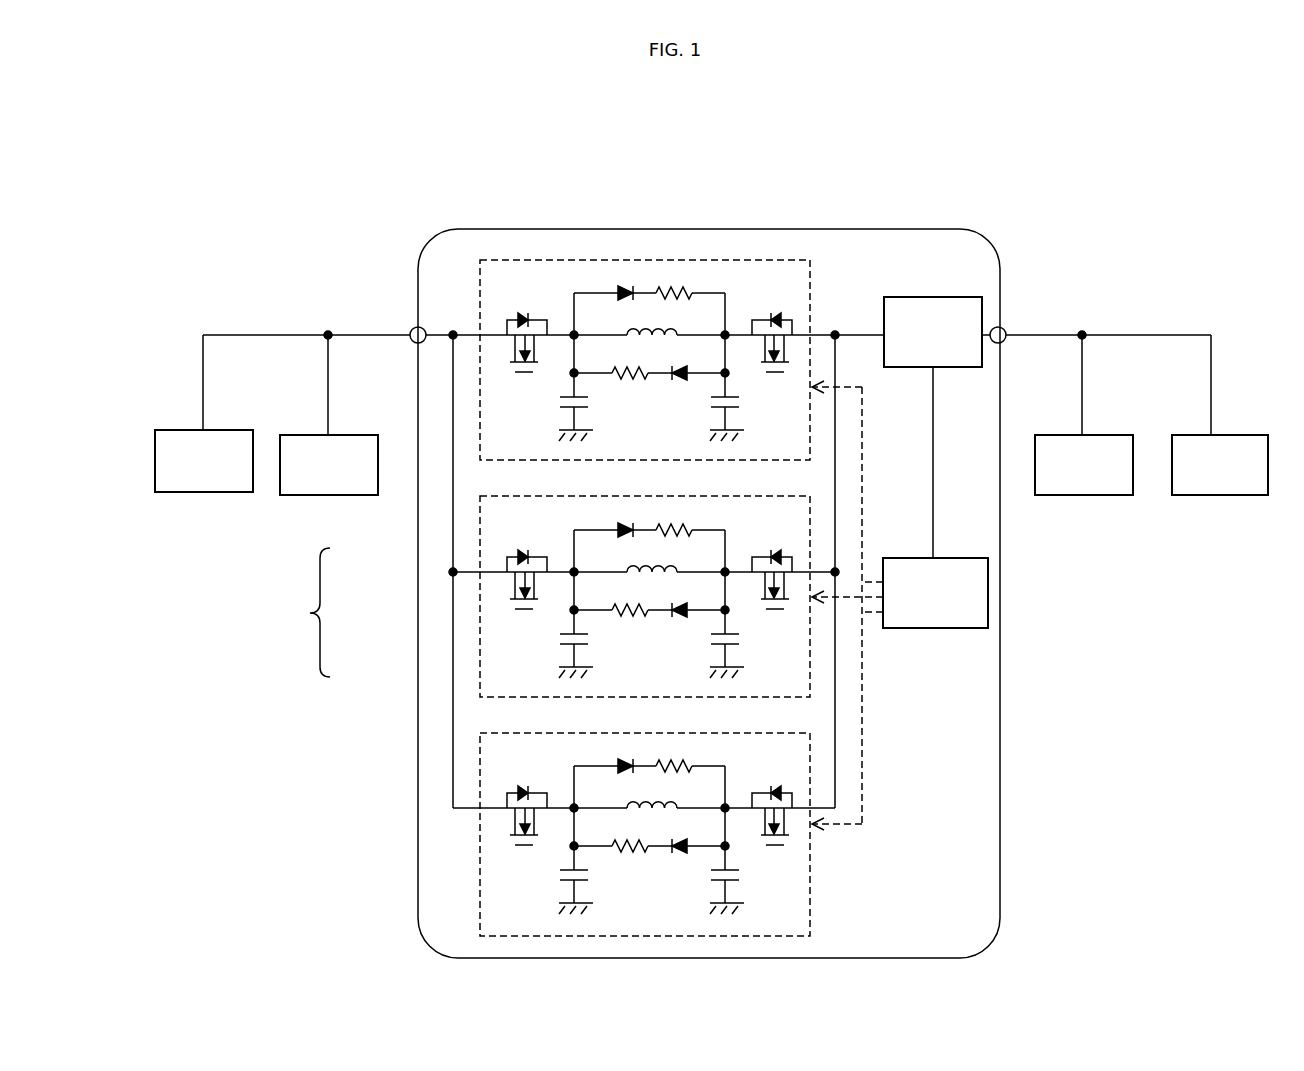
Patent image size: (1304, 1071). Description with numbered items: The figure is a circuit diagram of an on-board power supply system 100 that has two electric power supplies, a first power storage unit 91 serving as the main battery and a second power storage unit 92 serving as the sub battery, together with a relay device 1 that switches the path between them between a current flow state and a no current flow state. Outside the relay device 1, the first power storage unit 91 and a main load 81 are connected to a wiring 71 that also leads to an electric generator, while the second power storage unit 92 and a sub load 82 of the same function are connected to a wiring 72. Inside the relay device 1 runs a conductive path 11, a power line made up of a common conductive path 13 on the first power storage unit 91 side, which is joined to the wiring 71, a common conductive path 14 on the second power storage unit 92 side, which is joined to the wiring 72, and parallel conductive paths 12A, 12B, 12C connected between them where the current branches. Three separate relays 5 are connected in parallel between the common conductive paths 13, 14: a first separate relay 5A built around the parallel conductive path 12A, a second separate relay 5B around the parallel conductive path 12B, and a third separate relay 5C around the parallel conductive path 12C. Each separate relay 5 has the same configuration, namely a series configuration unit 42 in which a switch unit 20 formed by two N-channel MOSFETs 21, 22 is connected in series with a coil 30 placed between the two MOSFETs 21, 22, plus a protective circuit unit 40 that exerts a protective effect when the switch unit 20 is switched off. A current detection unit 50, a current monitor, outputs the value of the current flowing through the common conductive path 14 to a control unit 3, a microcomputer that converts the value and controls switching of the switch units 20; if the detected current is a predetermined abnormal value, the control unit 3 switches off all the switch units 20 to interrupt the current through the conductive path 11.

The relay device 1 is at (845, 230).
The control unit 3 is at (990, 598).
The separate relay 5 is at (555, 598).
The first separate relay 5A is at (480, 448).
The second separate relay 5B is at (480, 622).
The third separate relay 5C is at (480, 768).
The conductive path 11 is at (440, 334).
The parallel conductive path 12A is at (471, 334).
The parallel conductive path 12B is at (493, 570).
The parallel conductive path 12C is at (493, 806).
The common conductive path 13 is at (445, 338).
The common conductive path 14 is at (878, 337).
The switch unit 20 is at (649, 483).
The MOSFET 21 is at (547, 321).
The MOSFET 22 is at (753, 318).
The coil 30 is at (628, 333).
The protective circuit unit 40 is at (681, 282).
The series configuration unit 42 is at (562, 348).
The current detection unit 50 is at (931, 297).
The wiring 71 is at (360, 333).
The wiring 72 is at (1048, 333).
The main load 81 is at (173, 428).
The sub load 82 is at (1231, 435).
The first power storage unit 91 is at (295, 433).
The second power storage unit 92 is at (1100, 435).
The on-board power supply system 100 is at (1137, 224).